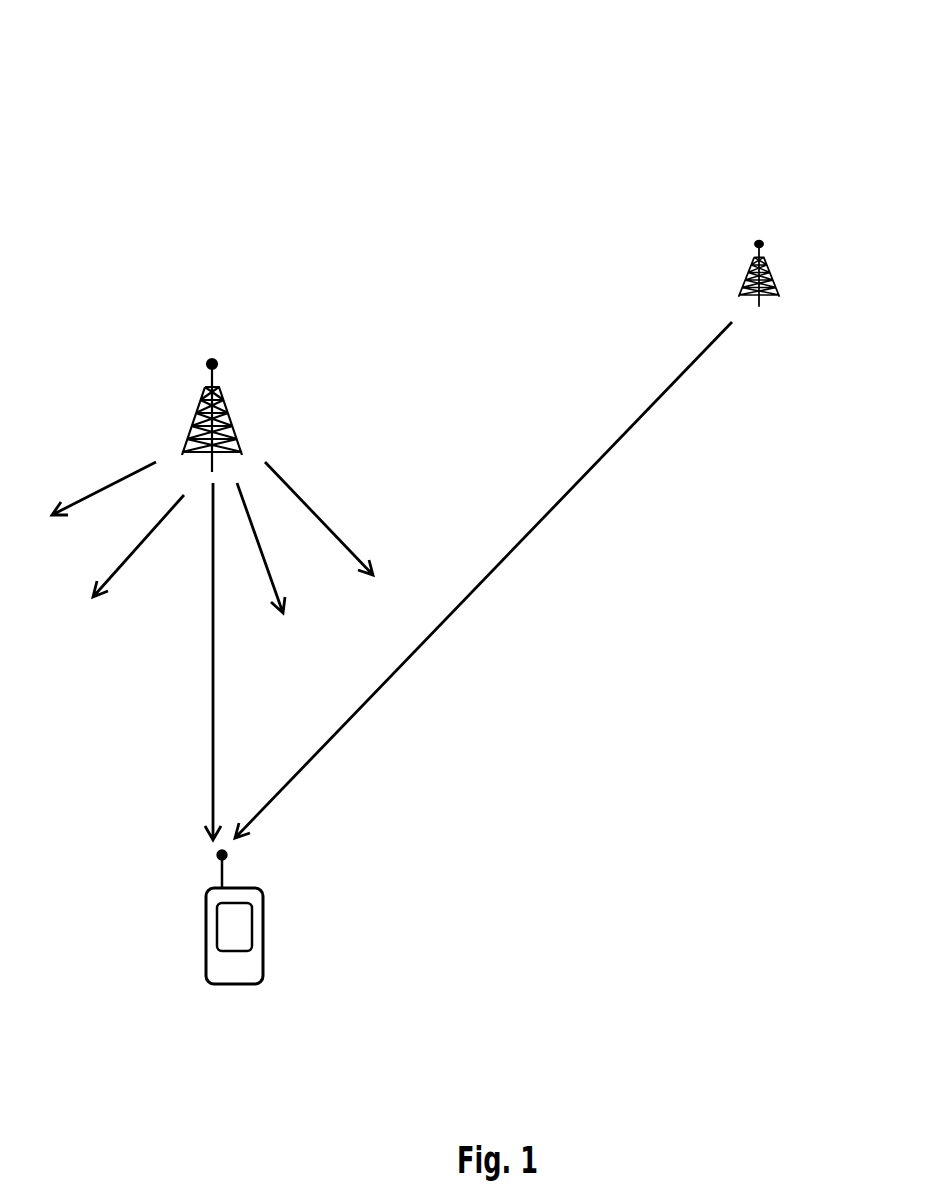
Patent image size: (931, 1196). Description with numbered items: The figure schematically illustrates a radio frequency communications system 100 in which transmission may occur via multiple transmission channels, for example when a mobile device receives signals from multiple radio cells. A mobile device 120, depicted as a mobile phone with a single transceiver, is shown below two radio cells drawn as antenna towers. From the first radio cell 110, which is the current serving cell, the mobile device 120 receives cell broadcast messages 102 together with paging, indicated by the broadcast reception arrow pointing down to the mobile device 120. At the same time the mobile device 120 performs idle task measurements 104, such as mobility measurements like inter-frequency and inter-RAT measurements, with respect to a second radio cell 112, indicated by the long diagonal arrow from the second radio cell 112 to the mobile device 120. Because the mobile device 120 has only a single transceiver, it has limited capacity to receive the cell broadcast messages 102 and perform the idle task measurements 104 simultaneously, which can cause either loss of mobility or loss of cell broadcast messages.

The radio frequency communications system 100 is at (390, 132).
The first radio cell 110 is at (209, 325).
The second radio cell 112 is at (756, 217).
The mobile device 120 is at (275, 952).
The cell broadcast messages 102 is at (200, 801).
The idle task measurements 104 is at (352, 751).